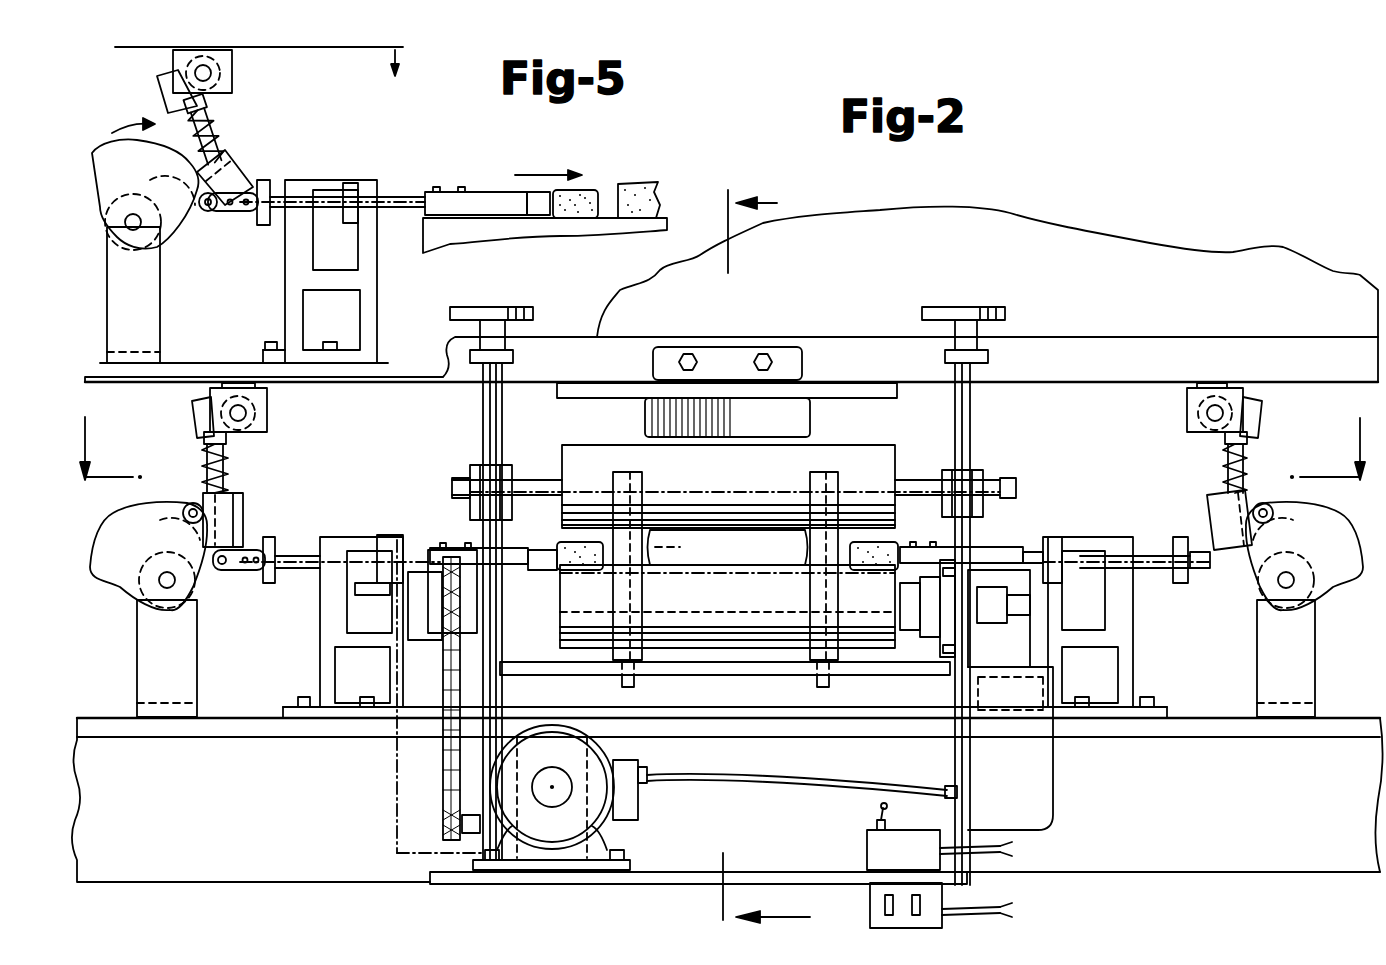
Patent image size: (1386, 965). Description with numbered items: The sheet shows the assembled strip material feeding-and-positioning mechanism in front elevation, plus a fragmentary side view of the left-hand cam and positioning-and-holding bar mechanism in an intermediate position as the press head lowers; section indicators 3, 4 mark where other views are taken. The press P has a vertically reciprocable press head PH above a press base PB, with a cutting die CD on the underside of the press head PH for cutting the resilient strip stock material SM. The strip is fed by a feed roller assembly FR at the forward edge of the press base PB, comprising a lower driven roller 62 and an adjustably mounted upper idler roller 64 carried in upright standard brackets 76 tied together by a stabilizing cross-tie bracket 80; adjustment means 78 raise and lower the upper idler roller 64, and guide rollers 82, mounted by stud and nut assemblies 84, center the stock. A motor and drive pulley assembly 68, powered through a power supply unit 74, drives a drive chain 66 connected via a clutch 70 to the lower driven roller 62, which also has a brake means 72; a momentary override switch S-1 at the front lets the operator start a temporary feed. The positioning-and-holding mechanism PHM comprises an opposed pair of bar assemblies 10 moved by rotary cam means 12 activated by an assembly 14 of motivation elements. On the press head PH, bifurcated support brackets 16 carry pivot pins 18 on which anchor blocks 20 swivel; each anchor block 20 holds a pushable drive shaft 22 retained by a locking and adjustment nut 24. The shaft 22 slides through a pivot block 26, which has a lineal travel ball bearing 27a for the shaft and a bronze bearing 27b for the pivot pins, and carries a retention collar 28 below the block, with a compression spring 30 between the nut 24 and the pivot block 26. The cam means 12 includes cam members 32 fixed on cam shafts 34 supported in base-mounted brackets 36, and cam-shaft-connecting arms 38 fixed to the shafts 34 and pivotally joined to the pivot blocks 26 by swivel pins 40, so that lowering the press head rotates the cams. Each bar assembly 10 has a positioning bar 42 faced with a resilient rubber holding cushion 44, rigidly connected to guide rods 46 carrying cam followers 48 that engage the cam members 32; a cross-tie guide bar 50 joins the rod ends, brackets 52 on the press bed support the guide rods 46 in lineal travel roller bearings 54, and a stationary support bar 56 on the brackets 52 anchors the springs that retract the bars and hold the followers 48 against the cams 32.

In FIG. 2, the section line 3- 3 is at (722, 446).
In FIG. 2, the section line 4- 4 is at (784, 559).
In FIG. 5, the material-positioning-and-holding bar assembly 10 is at (500, 190).
In FIG. 2, the material-positioning-and-holding bar assembly 10 is at (470, 545).
In FIG. 2, the rotary cam means 12 is at (150, 485).
In FIG. 2, the assembly of motivation elements 14 is at (185, 432).
In FIG. 5, the support bracket 16 is at (232, 78).
In FIG. 2, the support bracket 16 is at (268, 412).
In FIG. 5, the pivot pin 18 is at (212, 70).
In FIG. 2, the pivot pin 18 is at (250, 405).
In FIG. 5, the anchor block 20 is at (160, 76).
In FIG. 2, the anchor block 20 is at (192, 402).
In FIG. 5, the pushable drive shaft 22 is at (212, 122).
In FIG. 2, the pushable drive shaft 22 is at (203, 470).
In FIG. 5, the locking and adjustment nut 24 is at (168, 115).
In FIG. 2, the locking and adjustment nut 24 is at (228, 438).
In FIG. 5, the pivot block 26 is at (248, 165).
In FIG. 2, the pivot block 26 is at (243, 505).
In FIG. 2, the lineal travel ball bearing 27a is at (235, 492).
In FIG. 2, the bronze bearing 27b is at (150, 510).
In FIG. 2, the retention collar 28 is at (240, 533).
In FIG. 2, the compression spring 30 is at (228, 456).
In FIG. 5, the cam member 32 is at (145, 184).
In FIG. 2, the cam member 32 is at (95, 548).
In FIG. 5, the cam shaft 34 is at (136, 232).
In FIG. 2, the cam shaft 34 is at (160, 585).
In FIG. 5, the base-mounted bracket 36 is at (165, 294).
In FIG. 2, the base-mounted bracket 36 is at (135, 648).
In FIG. 2, the cam-shaft-connecting arm 38 is at (1320, 520).
In FIG. 5, the swivel pin 40 is at (178, 215).
In FIG. 2, the swivel pin 40 is at (180, 518).
In FIG. 5, the positioning bar 42 is at (540, 212).
In FIG. 2, the positioning bar 42 is at (535, 548).
In FIG. 5, the resilient rubber holding cushion 44 is at (585, 188).
In FIG. 2, the resilient rubber holding cushion 44 is at (583, 570).
In FIG. 5, the guide rod 46 is at (395, 180).
In FIG. 2, the guide rod 46 is at (300, 556).
In FIG. 2, the cam follower 48 is at (218, 572).
In FIG. 5, the cross-tie guide bar 50 is at (268, 180).
In FIG. 2, the cross-tie guide bar 50 is at (270, 583).
In FIG. 5, the bracket 52 is at (285, 264).
In FIG. 2, the bracket 52 is at (320, 625).
In FIG. 2, the lineal travel roller bearing 54 is at (360, 583).
In FIG. 5, the stationary support bar 56 is at (351, 183).
In FIG. 2, the stationary support bar 56 is at (390, 535).
In FIG. 2, the lower driven roller 62 is at (727, 606).
In FIG. 2, the upper idler roller 64 is at (734, 486).
In FIG. 2, the drive chain 66 is at (443, 758).
In FIG. 2, the motor and drive pulley assembly 68 is at (615, 833).
In FIG. 2, the clutch 70 is at (430, 600).
In FIG. 2, the brake means 72 is at (990, 590).
In FIG. 2, the power supply unit 74 is at (1010, 748).
In FIG. 2, the upright standard bracket 76 is at (483, 410).
In FIG. 2, the adjustment means 78 is at (505, 333).
In FIG. 2, the stabilizing cross-tie bracket 80 is at (704, 690).
In FIG. 2, the guide roller 82 is at (613, 482).
In FIG. 2, the stud and nut assembly 84 is at (620, 683).
In FIG. 2, the press P is at (1080, 222).
In FIG. 5, the press head PH is at (380, 51).
In FIG. 2, the press head PH is at (731, 294).
In FIG. 5, the press base PB is at (195, 362).
In FIG. 2, the press base PB is at (727, 800).
In FIG. 2, the strip-material-positioning-and-holding mechanism PHM is at (440, 485).
In FIG. 5, the strip stock material SM is at (640, 182).
In FIG. 2, the strip stock material SM is at (728, 547).
In FIG. 2, the cutting die CD is at (645, 416).
In FIG. 2, the feed roller assembly FR is at (802, 771).
In FIG. 2, the momentary override switch S-1 is at (939, 865).